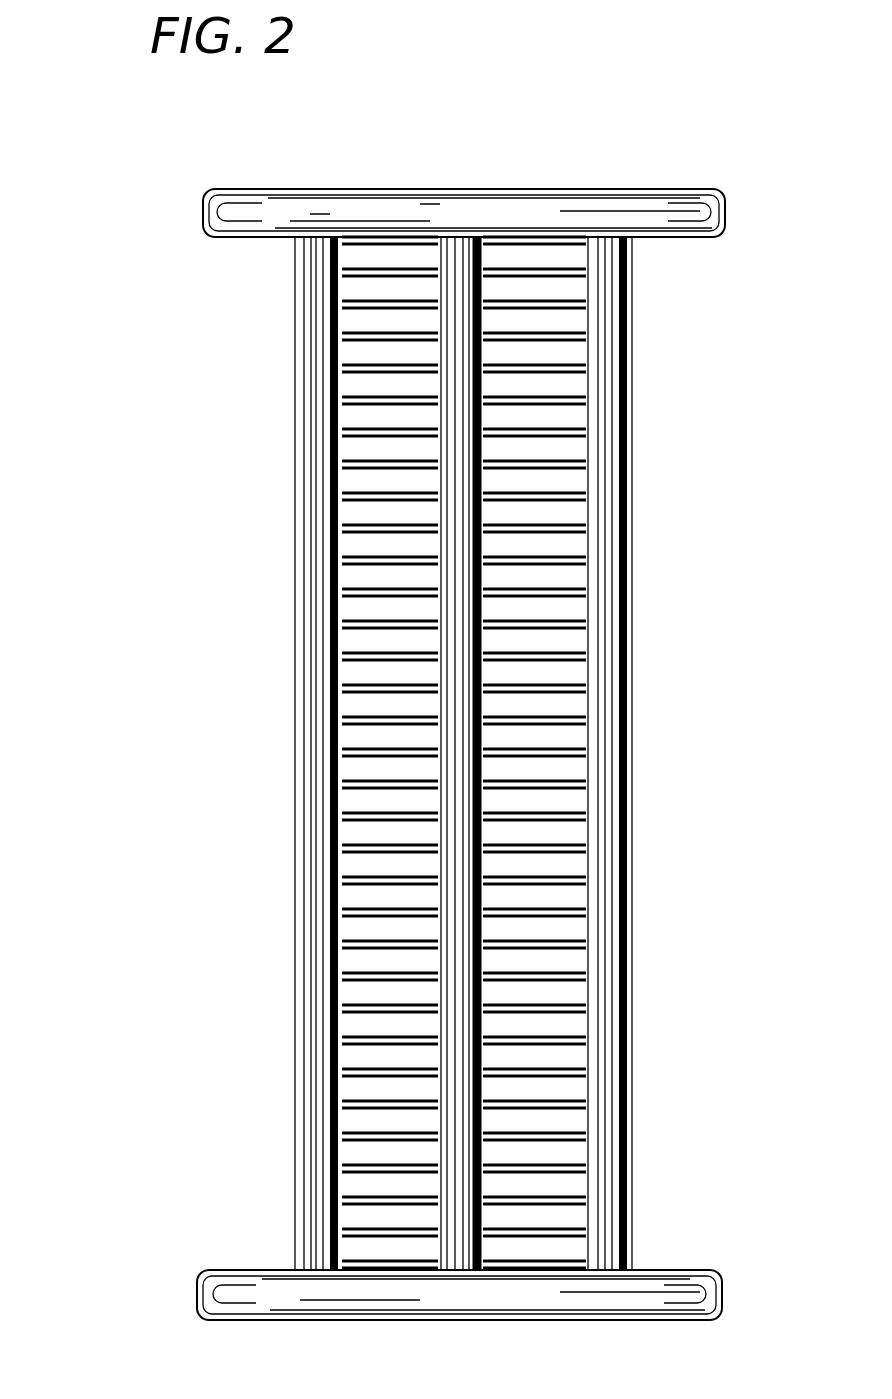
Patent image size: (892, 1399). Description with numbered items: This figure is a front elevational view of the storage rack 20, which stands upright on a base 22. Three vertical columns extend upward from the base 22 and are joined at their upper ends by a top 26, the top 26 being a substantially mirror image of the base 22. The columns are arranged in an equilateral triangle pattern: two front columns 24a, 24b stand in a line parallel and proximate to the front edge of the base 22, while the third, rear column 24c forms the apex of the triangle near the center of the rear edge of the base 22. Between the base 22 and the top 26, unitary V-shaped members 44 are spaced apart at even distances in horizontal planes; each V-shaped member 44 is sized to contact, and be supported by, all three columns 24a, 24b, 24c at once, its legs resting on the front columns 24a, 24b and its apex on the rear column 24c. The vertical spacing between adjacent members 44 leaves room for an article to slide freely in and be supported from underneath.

The storage rack 20 is at (206, 581).
The base 22 is at (236, 1290).
The front column 24a is at (293, 768).
The front column 24b is at (630, 765).
The rear column 24c is at (455, 416).
The top 26 is at (543, 214).
The V-shaped member 44 is at (528, 553).